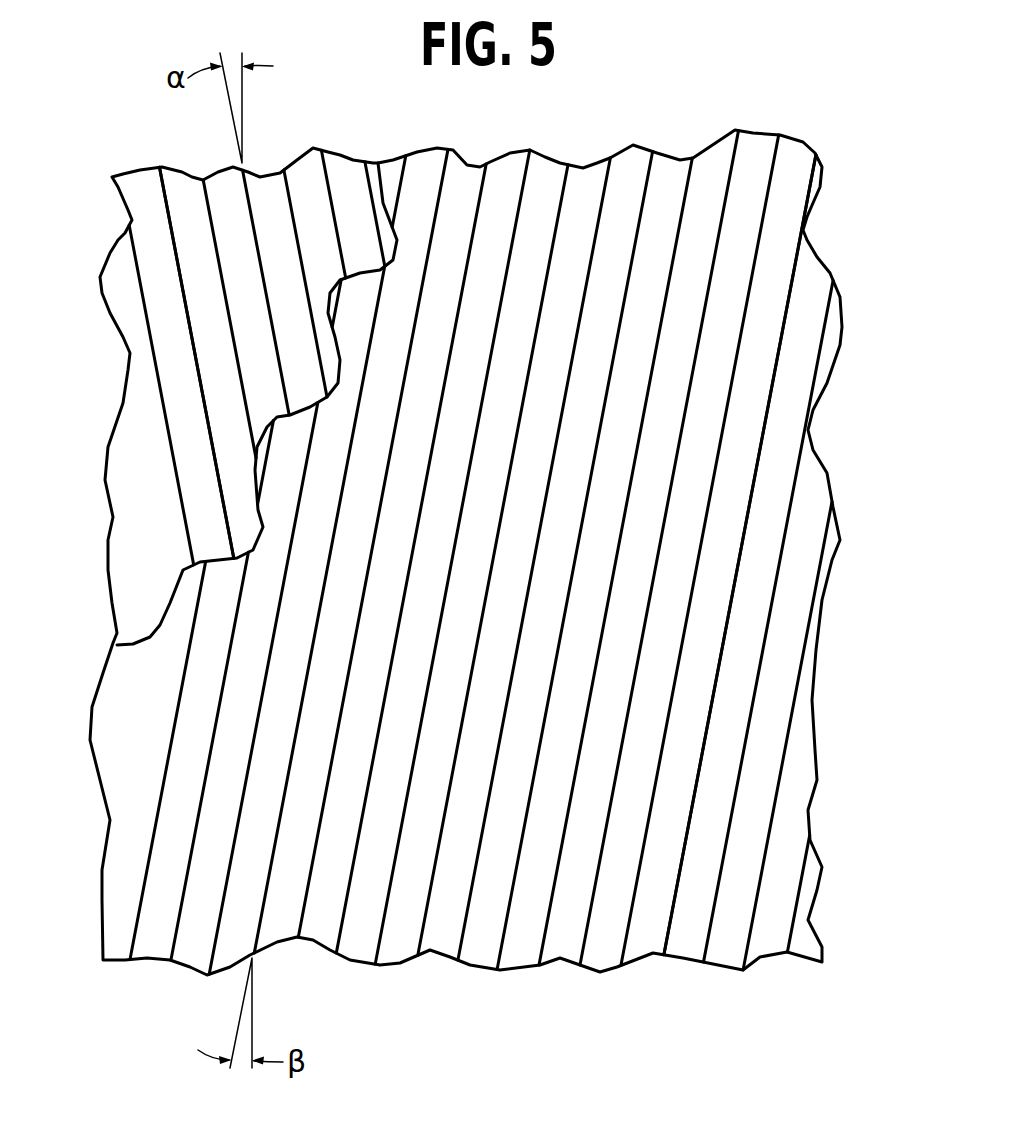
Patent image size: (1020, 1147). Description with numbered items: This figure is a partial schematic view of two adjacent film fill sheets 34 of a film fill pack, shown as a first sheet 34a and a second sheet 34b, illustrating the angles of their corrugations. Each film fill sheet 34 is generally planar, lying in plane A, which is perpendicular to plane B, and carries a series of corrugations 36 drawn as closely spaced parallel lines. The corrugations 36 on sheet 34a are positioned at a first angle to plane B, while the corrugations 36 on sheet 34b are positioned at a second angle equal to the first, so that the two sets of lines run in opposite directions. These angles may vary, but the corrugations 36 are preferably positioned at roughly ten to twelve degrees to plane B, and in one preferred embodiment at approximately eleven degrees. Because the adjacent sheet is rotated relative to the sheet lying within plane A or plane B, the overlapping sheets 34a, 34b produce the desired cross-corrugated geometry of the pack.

The film fill sheet 34 is at (810, 143).
The film fill sheet 34a is at (280, 163).
The film fill sheet 34b is at (363, 265).
The corrugations 36 is at (172, 213).